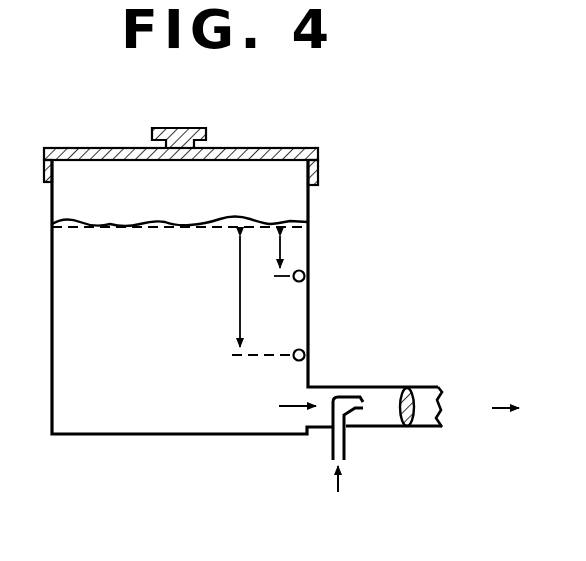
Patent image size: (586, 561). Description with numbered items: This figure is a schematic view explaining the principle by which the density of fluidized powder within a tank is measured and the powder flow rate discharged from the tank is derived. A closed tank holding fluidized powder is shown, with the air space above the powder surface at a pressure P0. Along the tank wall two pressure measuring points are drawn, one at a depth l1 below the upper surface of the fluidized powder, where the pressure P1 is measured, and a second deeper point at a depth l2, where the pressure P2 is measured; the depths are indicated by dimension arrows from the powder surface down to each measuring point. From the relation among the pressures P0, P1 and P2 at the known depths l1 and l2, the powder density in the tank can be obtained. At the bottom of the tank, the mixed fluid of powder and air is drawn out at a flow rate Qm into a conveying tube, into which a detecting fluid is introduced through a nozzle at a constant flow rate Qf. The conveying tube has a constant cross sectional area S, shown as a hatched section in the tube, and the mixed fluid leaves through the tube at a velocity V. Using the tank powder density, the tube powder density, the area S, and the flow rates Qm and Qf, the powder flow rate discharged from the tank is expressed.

The pressure of the air within the tank P0 is at (181, 192).
The pressure measured at depth l1 P1 is at (305, 276).
The pressure measured at depth l2 P2 is at (305, 355).
The cross sectional area of the conveying tube S is at (411, 392).
The flow rate of the mixed fluid Qm is at (276, 407).
The flow rate of the detecting fluid Qf is at (338, 496).
The outlet flow velocity V is at (518, 410).
The depth of first pressure measurement l1 is at (290, 256).
The depth of second pressure measurement l2 is at (253, 291).